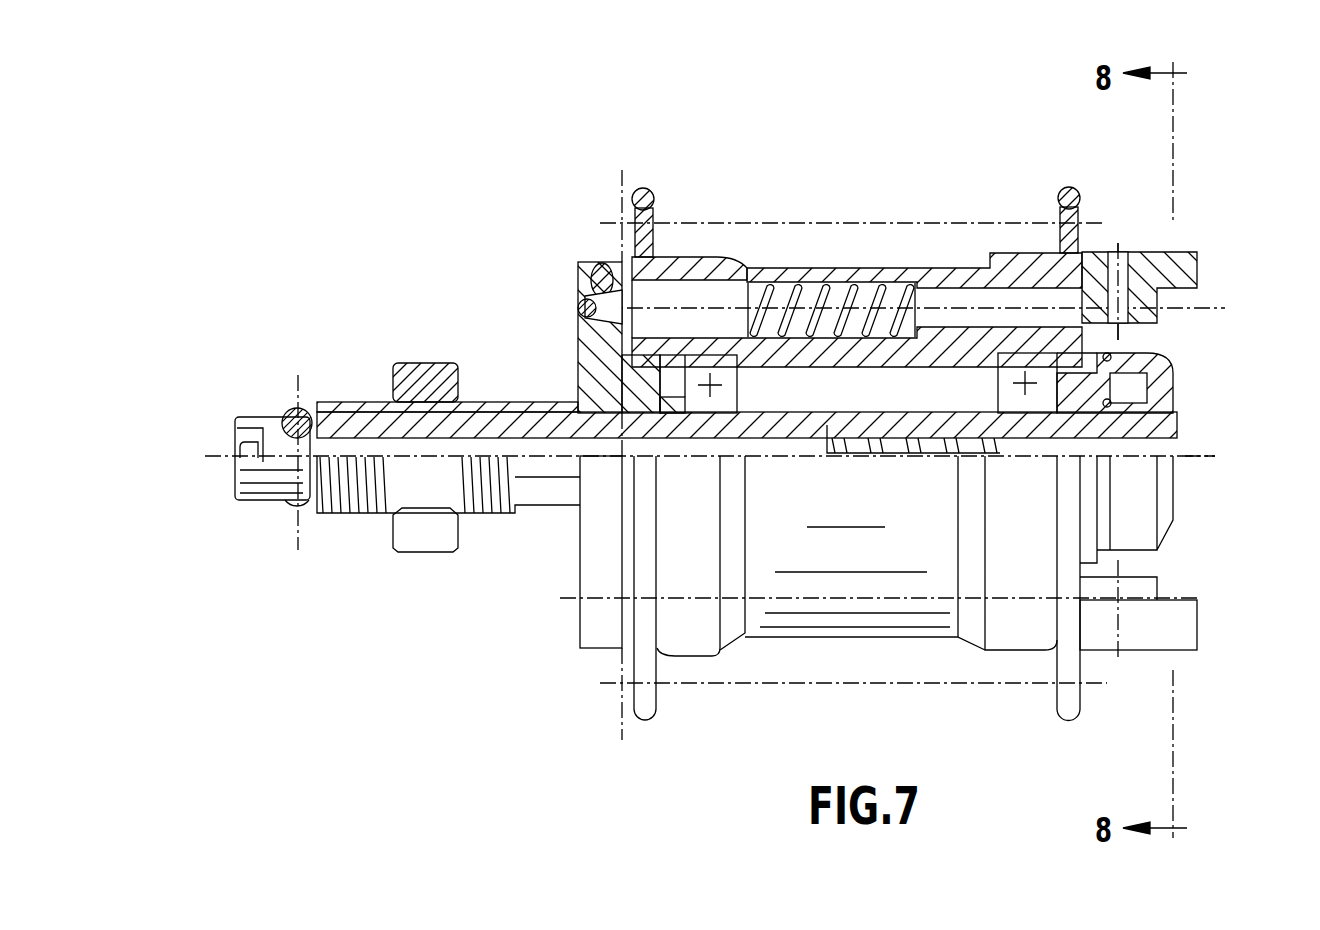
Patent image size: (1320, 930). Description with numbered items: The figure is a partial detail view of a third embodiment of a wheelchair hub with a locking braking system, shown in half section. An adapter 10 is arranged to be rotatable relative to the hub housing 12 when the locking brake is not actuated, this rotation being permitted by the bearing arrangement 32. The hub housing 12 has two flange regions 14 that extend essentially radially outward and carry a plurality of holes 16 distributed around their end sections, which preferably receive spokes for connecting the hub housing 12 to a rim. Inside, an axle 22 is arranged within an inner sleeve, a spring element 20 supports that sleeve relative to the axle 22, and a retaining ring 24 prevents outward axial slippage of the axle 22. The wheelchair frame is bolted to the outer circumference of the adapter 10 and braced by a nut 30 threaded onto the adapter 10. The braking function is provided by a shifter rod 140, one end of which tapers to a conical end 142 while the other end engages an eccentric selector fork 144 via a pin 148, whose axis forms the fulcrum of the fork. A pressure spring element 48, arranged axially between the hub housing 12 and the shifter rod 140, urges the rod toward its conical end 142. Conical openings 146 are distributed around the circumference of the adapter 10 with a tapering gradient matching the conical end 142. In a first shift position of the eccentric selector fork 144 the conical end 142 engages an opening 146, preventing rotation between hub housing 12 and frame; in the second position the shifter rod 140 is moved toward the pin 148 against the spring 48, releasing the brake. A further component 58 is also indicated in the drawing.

The adapter 10 is at (597, 380).
The hub housing 12 is at (995, 270).
The flange regions 14 is at (646, 190).
The holes 16 is at (652, 230).
The spring element 20 is at (908, 443).
The axle 22 is at (790, 447).
The retaining ring 24 is at (248, 456).
The nut 30 is at (432, 372).
The bearing arrangement 32 is at (700, 402).
The pressure spring element 48 is at (848, 318).
The nut assembly 58 is at (1210, 462).
The shifter rod 140 is at (731, 300).
The conical end 142 is at (625, 292).
The eccentric selector fork 144 is at (1188, 280).
The openings 146 is at (585, 325).
The pin 148 is at (1136, 262).